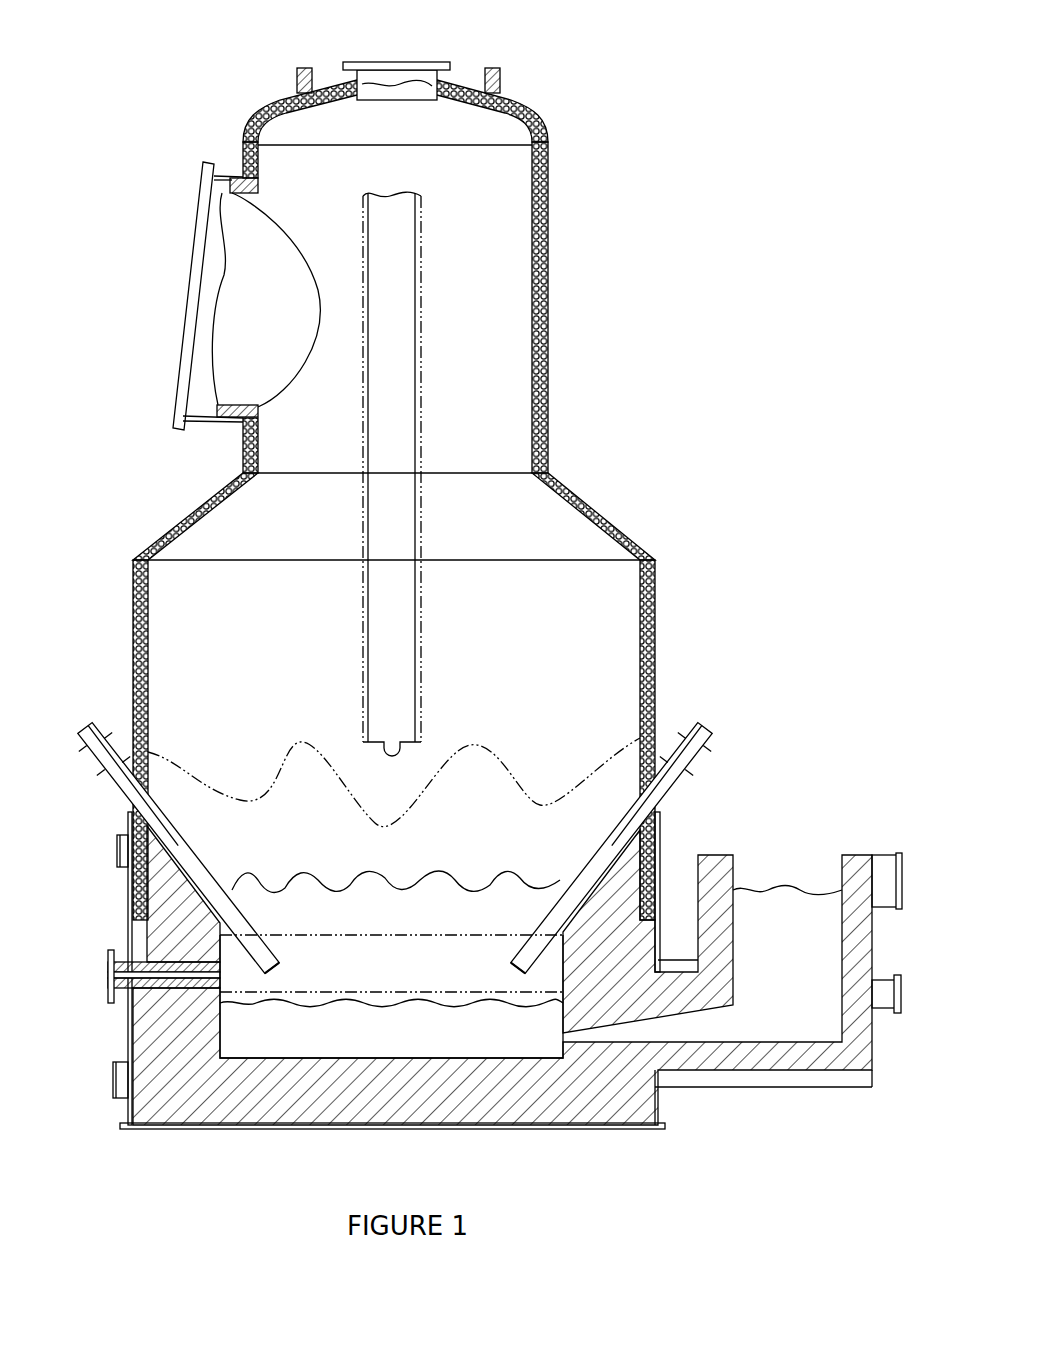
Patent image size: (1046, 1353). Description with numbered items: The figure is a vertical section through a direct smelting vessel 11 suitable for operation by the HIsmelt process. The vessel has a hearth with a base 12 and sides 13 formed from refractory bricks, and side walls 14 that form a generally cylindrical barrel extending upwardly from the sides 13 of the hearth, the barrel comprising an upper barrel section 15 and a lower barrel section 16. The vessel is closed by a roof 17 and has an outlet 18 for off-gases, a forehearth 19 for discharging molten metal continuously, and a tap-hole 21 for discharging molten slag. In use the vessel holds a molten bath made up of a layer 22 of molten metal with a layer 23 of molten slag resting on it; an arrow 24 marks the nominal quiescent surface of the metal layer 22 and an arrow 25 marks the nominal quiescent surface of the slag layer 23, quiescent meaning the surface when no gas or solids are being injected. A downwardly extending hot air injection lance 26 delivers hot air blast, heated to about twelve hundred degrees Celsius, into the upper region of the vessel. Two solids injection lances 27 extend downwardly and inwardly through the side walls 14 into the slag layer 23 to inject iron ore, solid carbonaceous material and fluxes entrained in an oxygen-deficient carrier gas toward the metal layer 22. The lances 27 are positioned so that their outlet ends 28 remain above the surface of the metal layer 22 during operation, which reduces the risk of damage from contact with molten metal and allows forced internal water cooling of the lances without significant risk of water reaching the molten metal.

The metallurgical vessel 11 is at (133, 553).
The base 12 is at (237, 1100).
The sides 13 is at (162, 1045).
The side walls 14 is at (125, 886).
The upper barrel section 15 is at (135, 585).
The lower barrel section 16 is at (128, 938).
The roof 17 is at (197, 505).
The outlet 18 is at (193, 380).
The forehearth 19 is at (796, 962).
The tap-hole 21 is at (108, 982).
The layer of molten metal 22 is at (418, 1047).
The layer of molten slag 23 is at (361, 977).
The nominal quiescent surface of the metal layer 24 is at (400, 990).
The nominal quiescent surface of the slag layer 25 is at (443, 930).
The hot air injection lance 26 is at (402, 590).
The solids injection lances 27 is at (88, 732).
The outlet ends 28 is at (262, 968).